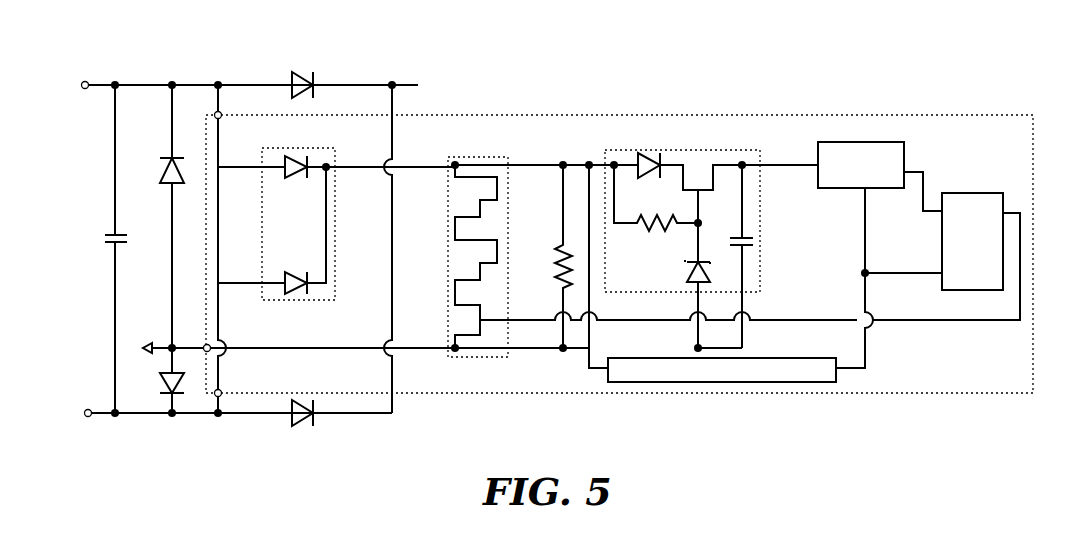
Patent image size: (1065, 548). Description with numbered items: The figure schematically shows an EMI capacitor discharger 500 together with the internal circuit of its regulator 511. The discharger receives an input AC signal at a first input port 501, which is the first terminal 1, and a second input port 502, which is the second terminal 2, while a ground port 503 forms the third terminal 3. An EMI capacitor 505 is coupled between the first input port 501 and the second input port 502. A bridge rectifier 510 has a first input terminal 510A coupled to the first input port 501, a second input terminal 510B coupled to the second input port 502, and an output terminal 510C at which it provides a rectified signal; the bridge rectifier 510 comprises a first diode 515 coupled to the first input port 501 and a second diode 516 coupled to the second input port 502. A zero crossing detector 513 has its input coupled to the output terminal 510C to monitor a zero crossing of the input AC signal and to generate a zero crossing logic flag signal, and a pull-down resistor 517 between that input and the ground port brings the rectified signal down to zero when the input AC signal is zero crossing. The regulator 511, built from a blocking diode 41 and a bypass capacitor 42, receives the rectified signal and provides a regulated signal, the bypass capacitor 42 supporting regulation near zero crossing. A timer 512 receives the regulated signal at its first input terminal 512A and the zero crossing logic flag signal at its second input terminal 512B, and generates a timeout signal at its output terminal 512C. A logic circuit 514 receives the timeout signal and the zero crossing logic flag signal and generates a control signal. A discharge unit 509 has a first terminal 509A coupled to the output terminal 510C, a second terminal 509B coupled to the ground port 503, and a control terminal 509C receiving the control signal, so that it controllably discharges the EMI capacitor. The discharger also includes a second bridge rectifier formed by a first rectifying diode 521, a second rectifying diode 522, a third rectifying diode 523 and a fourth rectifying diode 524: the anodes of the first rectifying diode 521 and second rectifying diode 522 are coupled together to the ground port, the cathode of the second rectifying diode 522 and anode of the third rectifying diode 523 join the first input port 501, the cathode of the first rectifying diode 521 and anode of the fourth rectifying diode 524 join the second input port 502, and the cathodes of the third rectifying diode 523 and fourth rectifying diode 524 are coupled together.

The EMI capacitor discharger 500 is at (83, 80).
The first input port 501 is at (84, 89).
The second input port 502 is at (86, 410).
The ground port 503 is at (170, 348).
The EMI capacitor 505 is at (106, 238).
The discharge unit 509 is at (510, 358).
The first terminal 509A is at (442, 172).
The second terminal 509B is at (447, 358).
The control terminal 509C is at (750, 269).
The bridge rectifier 510 is at (311, 302).
The first input terminal 510A is at (252, 177).
The second input terminal 510B is at (263, 283).
The output terminal 510C is at (342, 172).
The regulator 511 is at (690, 143).
The timer 512 is at (864, 142).
The first input terminal 512A is at (780, 157).
The second input terminal 512B is at (876, 278).
The output terminal 512C is at (928, 185).
The zero crossing detector 513 is at (806, 358).
The logic circuit 514 is at (1000, 186).
The first diode 515 is at (296, 178).
The second diode 516 is at (297, 271).
The pull-down resistor 517 is at (554, 268).
The first rectifying diode 521 is at (162, 384).
The second rectifying diode 522 is at (161, 176).
The third rectifying diode 523 is at (297, 78).
The fourth rectifying diode 524 is at (308, 421).
The blocking diode 41 is at (645, 178).
The bypass capacitor 42 is at (737, 241).
The first terminal 1 is at (223, 118).
The second terminal 2 is at (223, 392).
The third terminal 3 is at (200, 340).